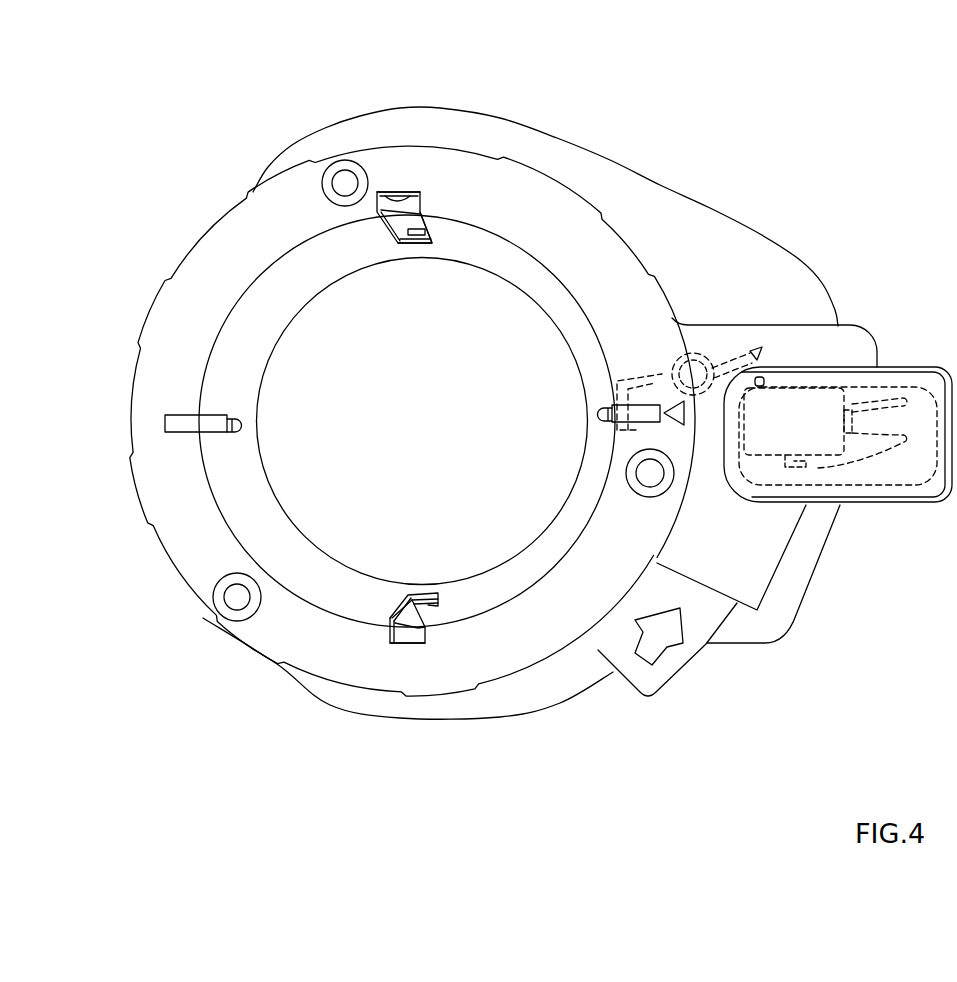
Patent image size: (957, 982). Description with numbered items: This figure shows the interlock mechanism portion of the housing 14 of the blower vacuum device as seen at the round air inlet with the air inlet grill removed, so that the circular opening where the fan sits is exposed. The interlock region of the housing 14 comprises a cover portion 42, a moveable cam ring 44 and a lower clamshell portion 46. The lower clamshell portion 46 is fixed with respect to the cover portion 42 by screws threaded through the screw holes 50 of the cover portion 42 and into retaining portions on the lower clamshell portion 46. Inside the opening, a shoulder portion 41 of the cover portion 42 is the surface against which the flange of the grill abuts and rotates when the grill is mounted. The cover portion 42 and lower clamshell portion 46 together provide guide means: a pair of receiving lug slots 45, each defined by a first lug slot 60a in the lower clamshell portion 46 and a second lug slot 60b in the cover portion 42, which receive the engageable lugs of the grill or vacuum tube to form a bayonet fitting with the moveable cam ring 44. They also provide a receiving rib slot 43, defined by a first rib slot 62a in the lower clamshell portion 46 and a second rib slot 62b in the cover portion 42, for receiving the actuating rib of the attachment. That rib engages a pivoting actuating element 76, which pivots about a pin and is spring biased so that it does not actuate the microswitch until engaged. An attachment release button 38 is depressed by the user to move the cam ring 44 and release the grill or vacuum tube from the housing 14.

The housing 14 is at (533, 170).
The attachment release button 38 is at (673, 663).
The shoulder portion 41 is at (217, 350).
The cover portion 42 is at (583, 277).
The receiving rib slot 43 is at (160, 421).
The moveable cam ring 44 is at (400, 223).
The receiving lug slots 45 is at (413, 191).
The lower clamshell portion 46 is at (378, 243).
The screw holes 50 is at (232, 598).
The first lug slots 60a is at (413, 247).
The second lug slots 60b is at (388, 190).
The first rib slot 62a is at (617, 428).
The second rib slot 62b is at (641, 390).
The pivoting actuating element 76 is at (753, 356).